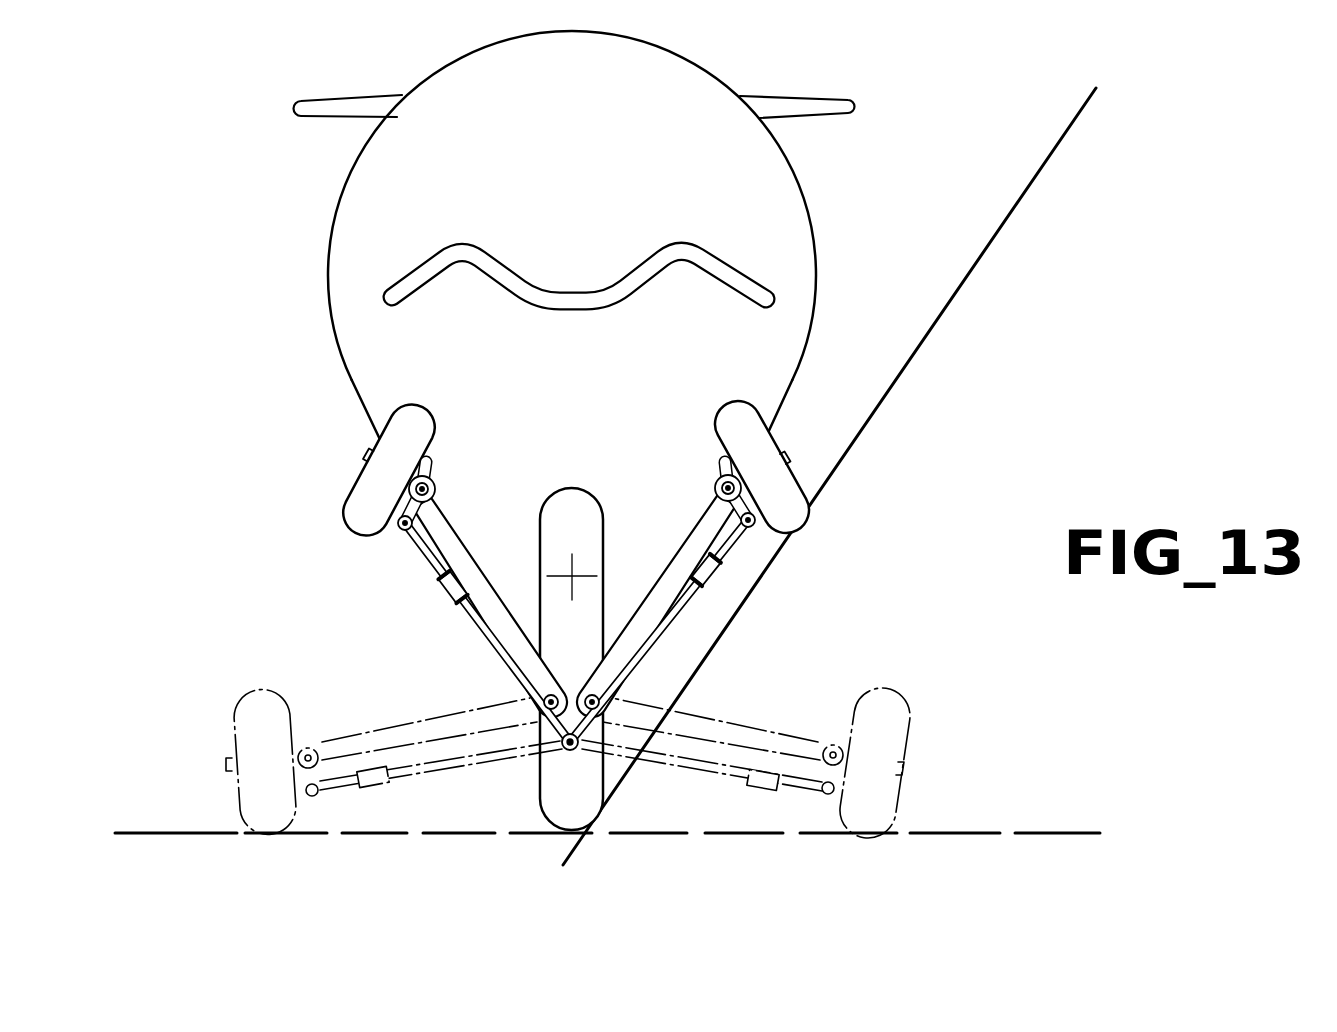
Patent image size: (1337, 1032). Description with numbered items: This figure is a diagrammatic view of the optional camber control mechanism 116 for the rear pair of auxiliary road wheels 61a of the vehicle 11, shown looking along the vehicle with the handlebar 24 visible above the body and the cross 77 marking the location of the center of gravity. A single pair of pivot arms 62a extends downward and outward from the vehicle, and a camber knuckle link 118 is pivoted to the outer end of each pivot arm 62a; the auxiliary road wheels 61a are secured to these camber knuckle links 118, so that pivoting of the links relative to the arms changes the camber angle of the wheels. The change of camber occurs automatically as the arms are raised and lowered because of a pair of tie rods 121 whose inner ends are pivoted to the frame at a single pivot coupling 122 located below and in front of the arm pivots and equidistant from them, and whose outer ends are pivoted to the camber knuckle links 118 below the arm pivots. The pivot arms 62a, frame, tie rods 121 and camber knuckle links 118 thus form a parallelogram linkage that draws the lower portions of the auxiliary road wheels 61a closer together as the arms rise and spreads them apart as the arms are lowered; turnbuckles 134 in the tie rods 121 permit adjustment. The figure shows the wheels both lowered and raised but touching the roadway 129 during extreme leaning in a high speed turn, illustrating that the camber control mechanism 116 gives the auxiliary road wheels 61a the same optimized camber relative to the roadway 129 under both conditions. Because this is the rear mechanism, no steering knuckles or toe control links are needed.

The vehicle 11 is at (283, 197).
The handlebar 24 is at (483, 233).
The roadway 129 is at (1030, 185).
The cross designating center of gravity 77 is at (574, 575).
The auxiliary road wheels 61a is at (345, 500).
The pivot arms 62a is at (464, 542).
The turnbuckles 134 is at (448, 602).
The camber knuckle links 118 is at (432, 470).
The tie rods 121 is at (483, 633).
The pivot coupling 122 is at (566, 748).
The camber control mechanism 116 is at (358, 628).